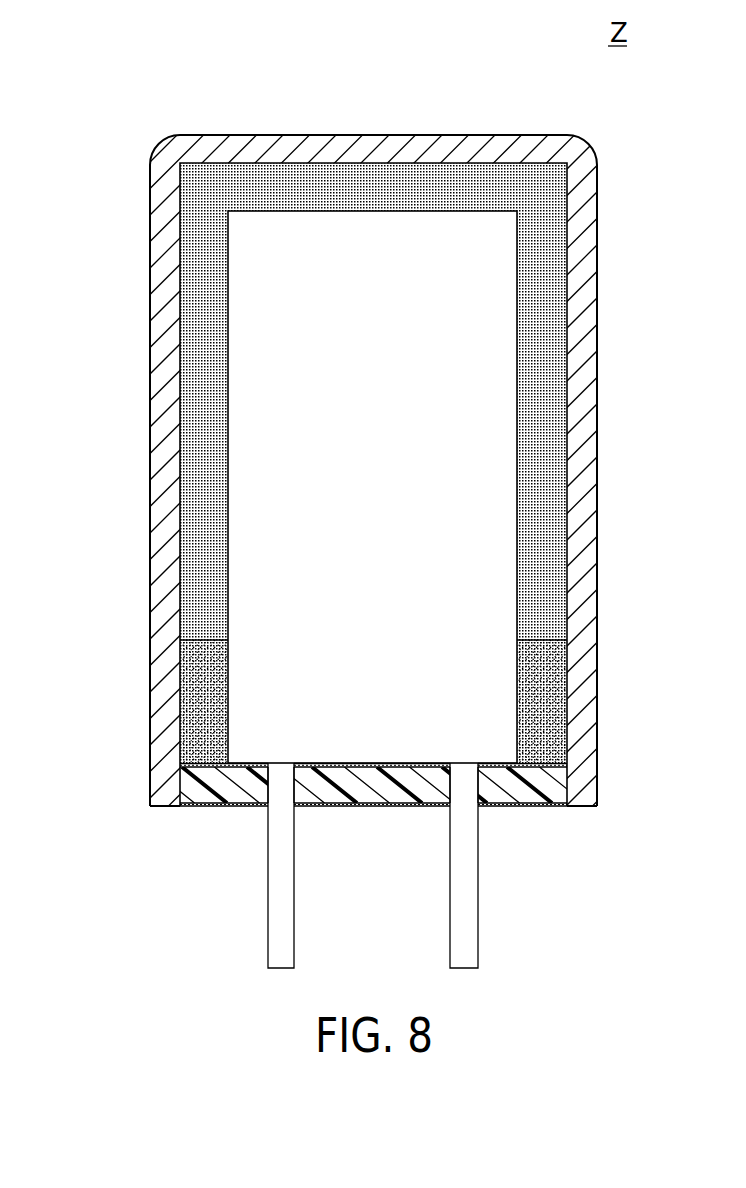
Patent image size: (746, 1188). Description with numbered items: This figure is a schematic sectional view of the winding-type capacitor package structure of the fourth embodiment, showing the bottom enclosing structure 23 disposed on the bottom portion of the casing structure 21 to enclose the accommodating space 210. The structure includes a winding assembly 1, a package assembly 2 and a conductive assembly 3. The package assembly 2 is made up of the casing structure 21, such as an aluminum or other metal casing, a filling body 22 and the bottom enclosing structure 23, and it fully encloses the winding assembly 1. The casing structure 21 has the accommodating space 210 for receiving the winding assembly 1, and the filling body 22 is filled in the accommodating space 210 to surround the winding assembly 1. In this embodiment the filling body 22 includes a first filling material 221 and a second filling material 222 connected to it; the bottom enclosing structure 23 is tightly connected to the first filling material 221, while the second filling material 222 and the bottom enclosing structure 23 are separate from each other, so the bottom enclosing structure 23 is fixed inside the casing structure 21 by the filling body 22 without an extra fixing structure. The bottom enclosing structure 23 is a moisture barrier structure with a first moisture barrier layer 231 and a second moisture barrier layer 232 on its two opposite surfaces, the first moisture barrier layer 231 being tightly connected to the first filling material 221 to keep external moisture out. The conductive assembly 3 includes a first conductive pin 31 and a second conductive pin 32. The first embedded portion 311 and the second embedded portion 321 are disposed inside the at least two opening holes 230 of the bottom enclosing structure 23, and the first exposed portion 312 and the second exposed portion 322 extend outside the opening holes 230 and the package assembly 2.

The winding assembly 1 is at (510, 393).
The package assembly 2 is at (373, 594).
The casing structure 21 is at (168, 400).
The accommodating space 210 is at (170, 472).
The filling body 22 is at (295, 463).
The first filling material 221 is at (205, 676).
The second filling material 222 is at (205, 580).
The bottom enclosing structure 23 is at (377, 796).
The opening holes 230 is at (307, 781).
The first moisture barrier layer 231 is at (538, 763).
The second moisture barrier layer 232 is at (378, 808).
The conductive assembly 3 is at (352, 496).
The first conductive pin 31 is at (212, 865).
The first embedded portion 311 is at (283, 790).
The first exposed portion 312 is at (283, 917).
The second conductive pin 32 is at (534, 865).
The second embedded portion 321 is at (463, 790).
The second exposed portion 322 is at (461, 916).